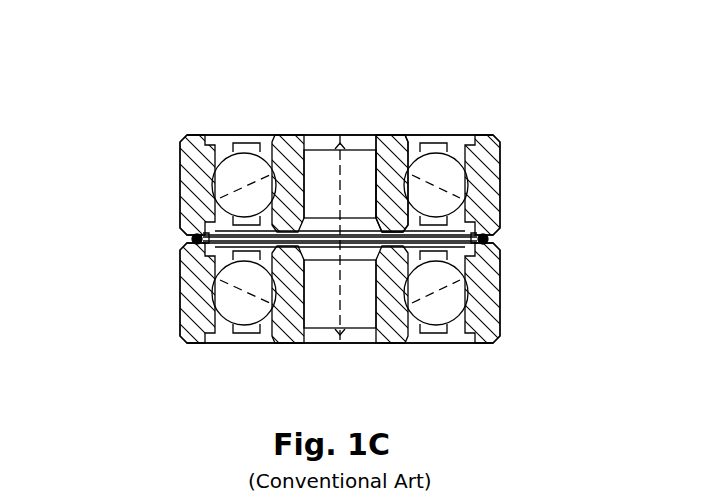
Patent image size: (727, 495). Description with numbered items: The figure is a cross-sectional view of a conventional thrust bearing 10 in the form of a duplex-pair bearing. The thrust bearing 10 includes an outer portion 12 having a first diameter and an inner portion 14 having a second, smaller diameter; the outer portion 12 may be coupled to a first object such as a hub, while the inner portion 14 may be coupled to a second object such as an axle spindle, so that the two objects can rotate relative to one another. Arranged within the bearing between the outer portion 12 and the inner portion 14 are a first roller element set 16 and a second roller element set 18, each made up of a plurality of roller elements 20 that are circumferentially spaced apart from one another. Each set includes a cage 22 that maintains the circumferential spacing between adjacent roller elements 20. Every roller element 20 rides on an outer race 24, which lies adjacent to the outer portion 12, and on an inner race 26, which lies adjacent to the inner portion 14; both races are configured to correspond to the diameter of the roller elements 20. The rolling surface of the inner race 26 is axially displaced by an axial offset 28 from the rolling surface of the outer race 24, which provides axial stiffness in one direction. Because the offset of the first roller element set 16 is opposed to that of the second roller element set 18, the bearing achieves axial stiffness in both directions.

The thrust bearing 10 is at (135, 92).
The outer portion 12 is at (497, 340).
The inner portion 14 is at (380, 152).
The first roller element set 16 is at (512, 181).
The second roller element set 18 is at (512, 303).
The roller element 20 is at (234, 302).
The cage 22 is at (244, 146).
The outer race 24 is at (188, 135).
The inner race 26 is at (294, 150).
The axial offset 28 is at (397, 152).